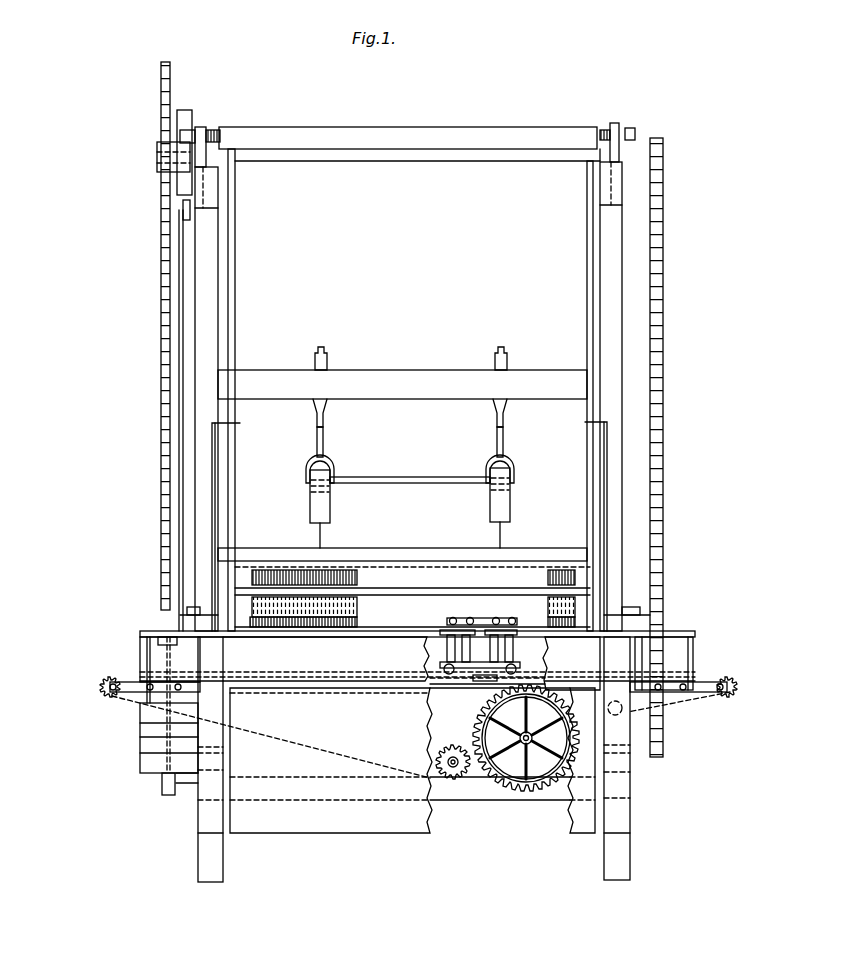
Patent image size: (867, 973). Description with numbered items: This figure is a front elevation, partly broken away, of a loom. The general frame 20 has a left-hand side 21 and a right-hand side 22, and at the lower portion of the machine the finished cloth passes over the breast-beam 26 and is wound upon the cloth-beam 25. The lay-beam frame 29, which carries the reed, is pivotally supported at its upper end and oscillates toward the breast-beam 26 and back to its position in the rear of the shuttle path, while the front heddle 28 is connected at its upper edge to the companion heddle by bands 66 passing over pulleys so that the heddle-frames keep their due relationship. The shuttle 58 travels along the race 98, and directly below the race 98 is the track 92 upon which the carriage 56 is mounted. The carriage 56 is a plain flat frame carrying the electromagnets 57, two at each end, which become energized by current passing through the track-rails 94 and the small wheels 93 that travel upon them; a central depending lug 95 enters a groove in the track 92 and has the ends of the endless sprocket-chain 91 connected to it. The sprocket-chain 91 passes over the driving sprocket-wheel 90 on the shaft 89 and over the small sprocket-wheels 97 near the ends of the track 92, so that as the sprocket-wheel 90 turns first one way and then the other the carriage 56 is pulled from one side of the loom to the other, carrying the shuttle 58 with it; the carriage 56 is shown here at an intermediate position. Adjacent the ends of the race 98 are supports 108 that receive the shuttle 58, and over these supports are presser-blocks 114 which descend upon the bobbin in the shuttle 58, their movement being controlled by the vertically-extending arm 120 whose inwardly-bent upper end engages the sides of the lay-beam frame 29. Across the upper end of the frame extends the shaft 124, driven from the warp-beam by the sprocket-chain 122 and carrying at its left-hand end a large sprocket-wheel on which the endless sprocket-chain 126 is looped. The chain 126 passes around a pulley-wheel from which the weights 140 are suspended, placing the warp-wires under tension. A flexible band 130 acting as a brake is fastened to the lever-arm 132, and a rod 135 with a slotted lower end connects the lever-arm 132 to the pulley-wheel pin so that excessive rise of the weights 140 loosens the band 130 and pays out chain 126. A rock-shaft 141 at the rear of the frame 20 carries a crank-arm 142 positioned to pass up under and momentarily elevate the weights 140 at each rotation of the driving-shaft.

The general frame 20 is at (414, 759).
The left-hand side of frame 21 is at (206, 399).
The right-hand side of frame 22 is at (612, 312).
The cloth-beam 25 is at (412, 760).
The breast-beam 26 is at (417, 656).
The front heddle 28 is at (404, 547).
The lay-beam frame 29 is at (237, 313).
The carriage 56 is at (490, 659).
The electromagnets 57 is at (478, 647).
The shuttle 58 is at (472, 620).
The bands 66 is at (515, 503).
The shaft 89 is at (520, 747).
The sprocket-wheel 90 is at (533, 788).
The sprocket-chain 91 is at (300, 745).
The track 92 is at (445, 688).
The wheels 93 is at (437, 660).
The track-rails 94 is at (155, 670).
The depending lug 95 is at (480, 682).
The small sprocket-wheels 97 is at (416, 688).
The race 98 is at (378, 628).
The supports 108 is at (160, 632).
The presser-blocks 114 is at (185, 610).
The vertically-extending arm 120 is at (212, 485).
The sprocket-chain 122 is at (674, 447).
The shaft 124 is at (425, 158).
The sprocket-chain 126 is at (161, 405).
The flexible band 130 is at (183, 175).
The lever-arm 132 is at (190, 214).
The rod 135 is at (184, 274).
The weights 140 is at (149, 738).
The rock-shaft 141 is at (190, 784).
The crank-arm 142 is at (160, 785).